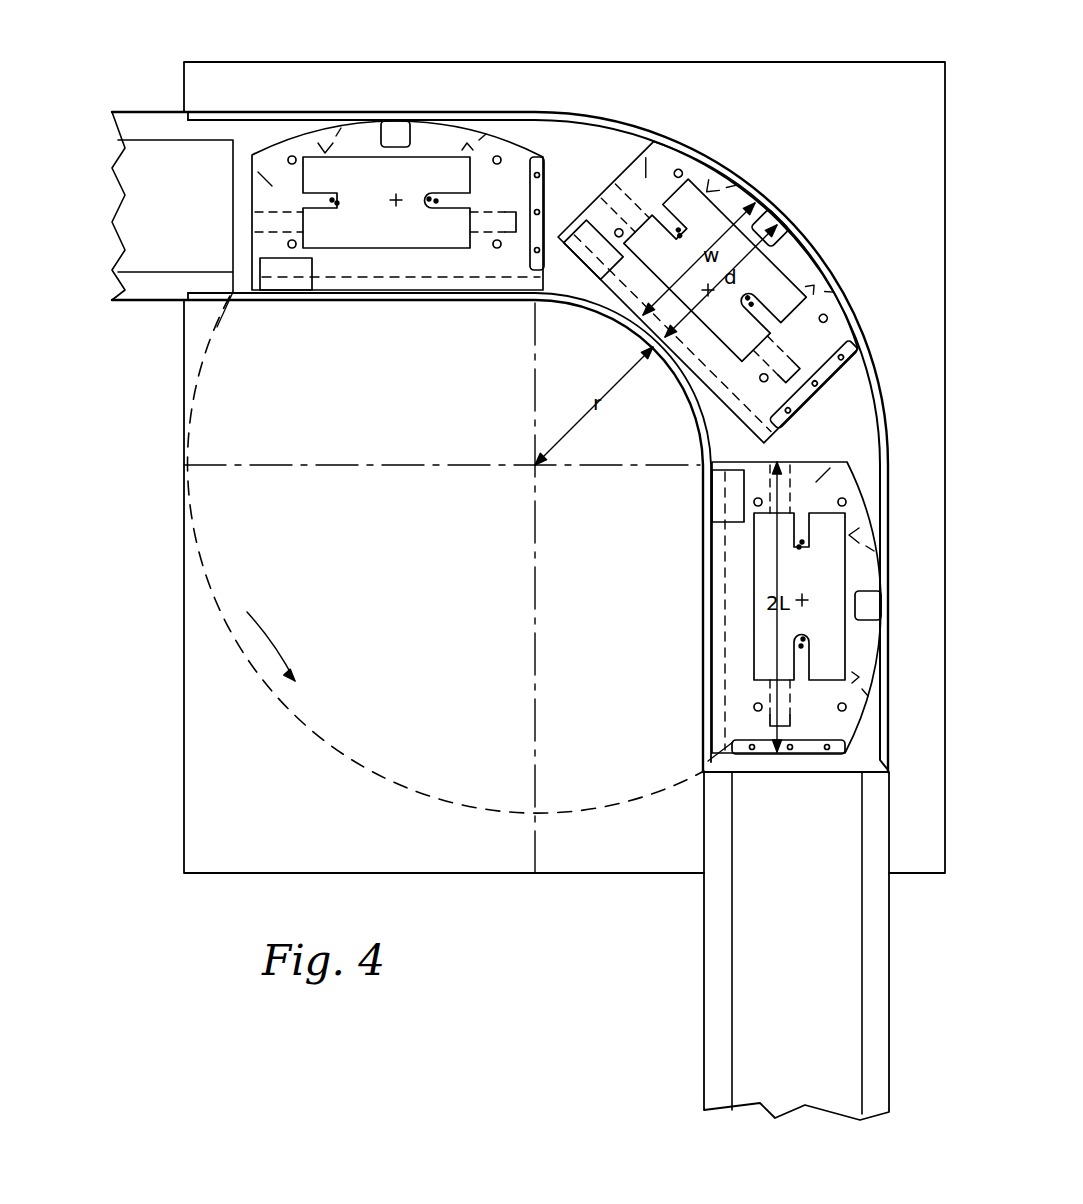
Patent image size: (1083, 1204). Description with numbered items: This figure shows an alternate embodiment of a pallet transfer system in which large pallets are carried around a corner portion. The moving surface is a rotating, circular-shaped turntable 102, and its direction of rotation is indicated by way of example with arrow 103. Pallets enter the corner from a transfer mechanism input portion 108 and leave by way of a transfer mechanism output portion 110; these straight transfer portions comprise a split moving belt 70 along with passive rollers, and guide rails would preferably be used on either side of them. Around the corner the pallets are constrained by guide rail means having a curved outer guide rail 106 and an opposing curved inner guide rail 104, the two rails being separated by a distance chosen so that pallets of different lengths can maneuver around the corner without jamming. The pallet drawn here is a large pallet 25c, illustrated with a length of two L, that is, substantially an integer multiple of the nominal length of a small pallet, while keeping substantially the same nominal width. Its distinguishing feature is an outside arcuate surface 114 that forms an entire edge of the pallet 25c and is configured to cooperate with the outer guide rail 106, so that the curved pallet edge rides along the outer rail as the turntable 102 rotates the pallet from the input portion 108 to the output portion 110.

The pallet 25c is at (488, 142).
The split moving belt 70 is at (153, 138).
The turntable 102 is at (452, 731).
The arrow 103 is at (250, 630).
The inner guide rail 104 is at (612, 322).
The outer guide rail 106 is at (638, 127).
The transfer mechanism input portion 108 is at (818, 825).
The transfer mechanism output portion 110 is at (197, 245).
The arcuate surface 114 is at (517, 143).